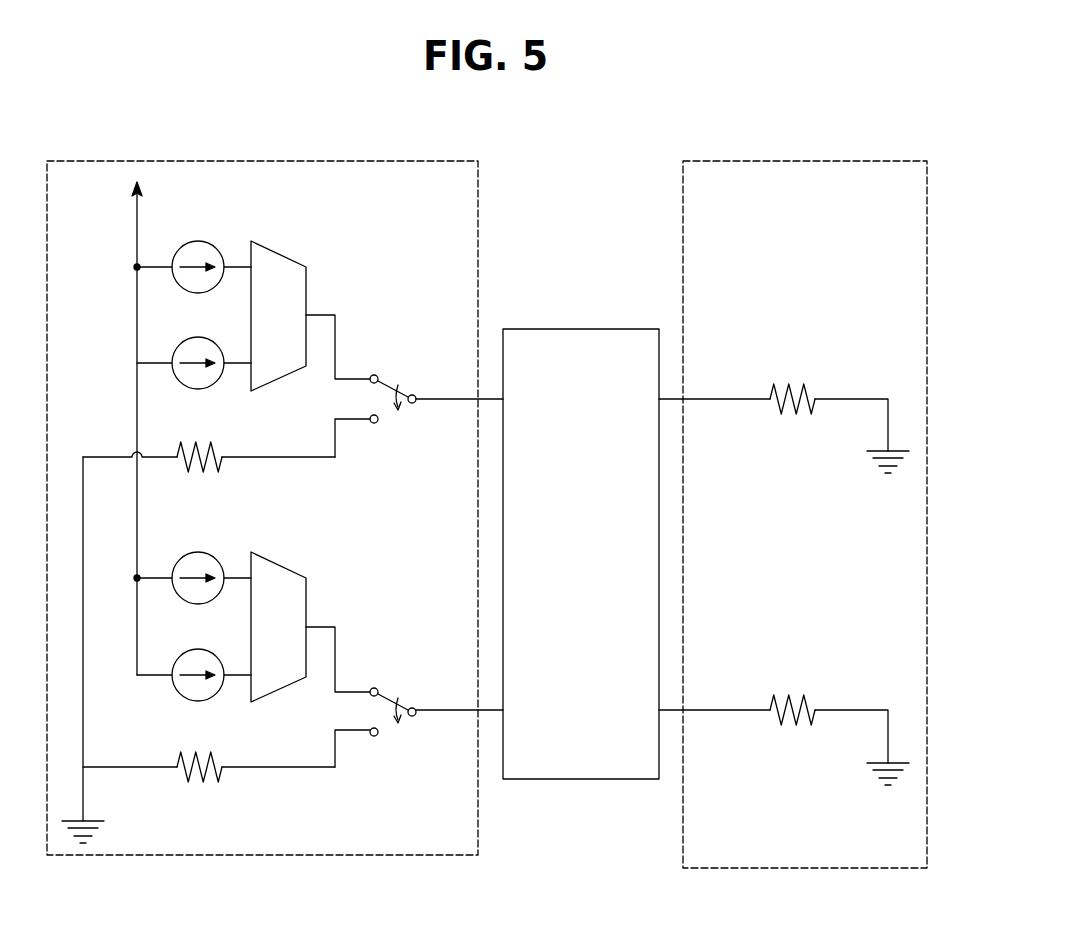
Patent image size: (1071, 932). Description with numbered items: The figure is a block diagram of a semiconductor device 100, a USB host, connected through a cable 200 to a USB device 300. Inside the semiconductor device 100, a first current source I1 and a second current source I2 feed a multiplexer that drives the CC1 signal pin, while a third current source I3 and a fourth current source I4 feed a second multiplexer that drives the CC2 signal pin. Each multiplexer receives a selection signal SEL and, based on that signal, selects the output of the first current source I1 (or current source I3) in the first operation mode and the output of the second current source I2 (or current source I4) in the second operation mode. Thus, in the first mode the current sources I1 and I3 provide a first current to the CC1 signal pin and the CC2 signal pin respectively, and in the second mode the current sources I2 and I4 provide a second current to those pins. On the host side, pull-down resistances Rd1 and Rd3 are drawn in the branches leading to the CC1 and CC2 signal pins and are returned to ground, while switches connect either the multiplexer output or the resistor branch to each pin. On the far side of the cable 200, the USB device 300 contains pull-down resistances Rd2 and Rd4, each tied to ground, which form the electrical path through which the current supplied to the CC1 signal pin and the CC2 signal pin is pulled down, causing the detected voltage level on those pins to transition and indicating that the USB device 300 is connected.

The semiconductor device 100 is at (282, 161).
The cable 200 is at (580, 329).
The USB device 300 is at (805, 161).
The first current source I1 is at (194, 252).
The second current source I2 is at (194, 350).
The current source I3 is at (194, 563).
The current source I4 is at (194, 661).
The selection signal SEL is at (278, 248).
The pull-down resistance Rd1 is at (209, 441).
The pull-down resistance Rd2 is at (784, 413).
The pull-down resistance Rd3 is at (209, 752).
The pull-down resistance Rd4 is at (784, 724).
The CC1 signal pin CC1 is at (436, 396).
The CC2 signal pin CC2 is at (436, 707).